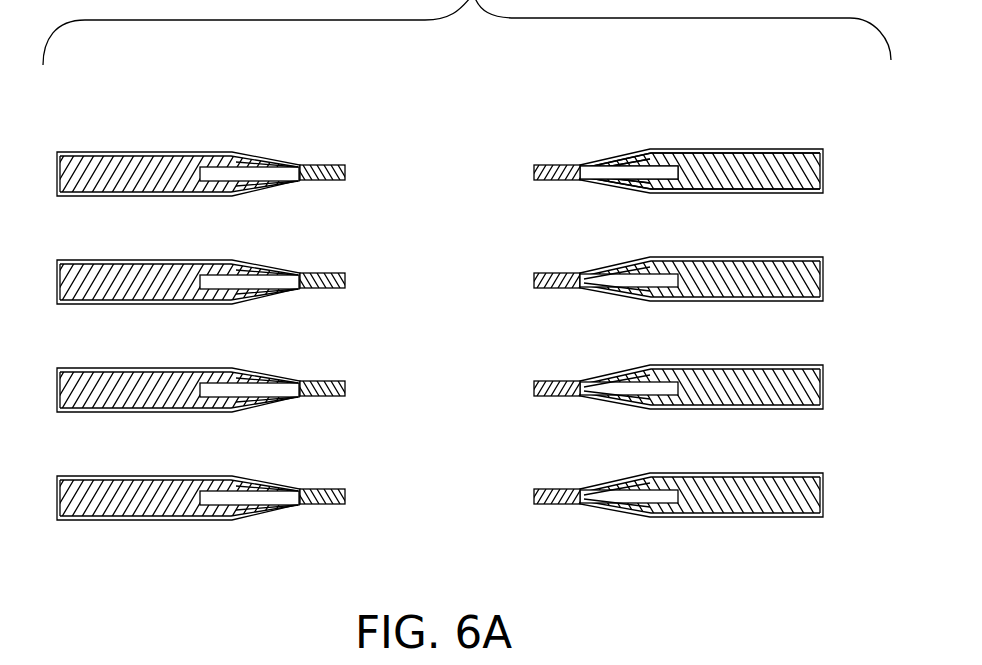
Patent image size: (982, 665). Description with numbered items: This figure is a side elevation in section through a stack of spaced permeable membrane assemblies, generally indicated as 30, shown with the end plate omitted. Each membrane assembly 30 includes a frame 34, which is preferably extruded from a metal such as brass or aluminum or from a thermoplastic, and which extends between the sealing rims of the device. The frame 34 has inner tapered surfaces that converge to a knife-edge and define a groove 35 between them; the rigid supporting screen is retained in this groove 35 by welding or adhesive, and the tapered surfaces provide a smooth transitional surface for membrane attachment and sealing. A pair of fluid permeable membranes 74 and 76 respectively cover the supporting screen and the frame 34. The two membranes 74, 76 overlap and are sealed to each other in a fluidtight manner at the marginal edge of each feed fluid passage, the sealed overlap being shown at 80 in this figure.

The membrane assembly 30 is at (828, 328).
The frame 34 is at (735, 165).
The groove 35 is at (660, 152).
The fluid permeable membrane 74 is at (605, 156).
The fluid permeable membrane 76 is at (587, 165).
The fluidtight seal 80 is at (322, 164).